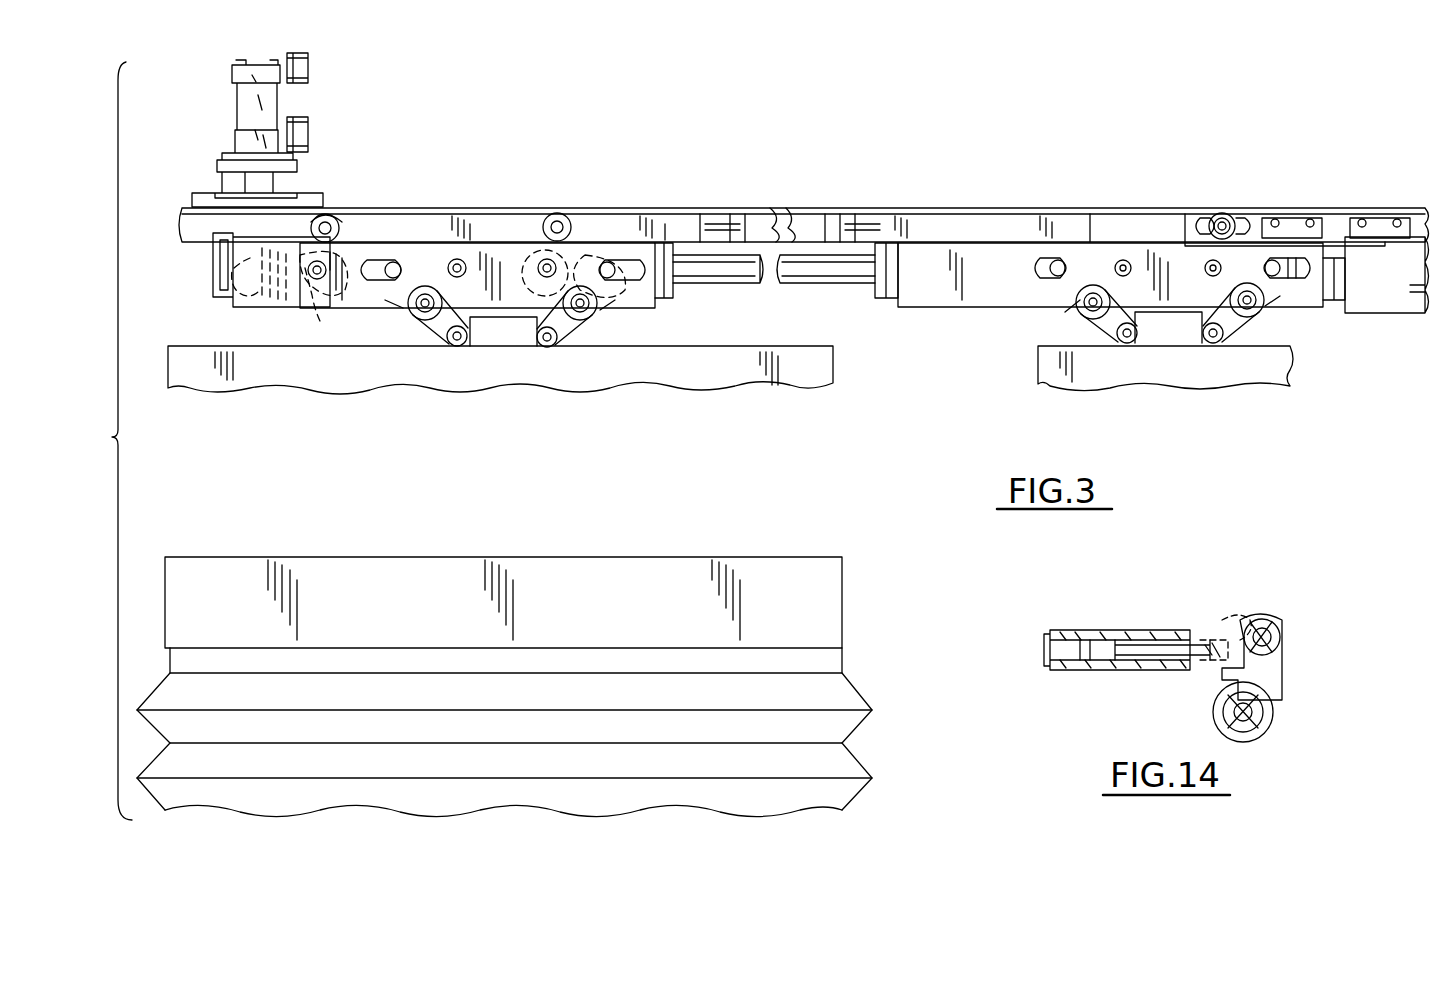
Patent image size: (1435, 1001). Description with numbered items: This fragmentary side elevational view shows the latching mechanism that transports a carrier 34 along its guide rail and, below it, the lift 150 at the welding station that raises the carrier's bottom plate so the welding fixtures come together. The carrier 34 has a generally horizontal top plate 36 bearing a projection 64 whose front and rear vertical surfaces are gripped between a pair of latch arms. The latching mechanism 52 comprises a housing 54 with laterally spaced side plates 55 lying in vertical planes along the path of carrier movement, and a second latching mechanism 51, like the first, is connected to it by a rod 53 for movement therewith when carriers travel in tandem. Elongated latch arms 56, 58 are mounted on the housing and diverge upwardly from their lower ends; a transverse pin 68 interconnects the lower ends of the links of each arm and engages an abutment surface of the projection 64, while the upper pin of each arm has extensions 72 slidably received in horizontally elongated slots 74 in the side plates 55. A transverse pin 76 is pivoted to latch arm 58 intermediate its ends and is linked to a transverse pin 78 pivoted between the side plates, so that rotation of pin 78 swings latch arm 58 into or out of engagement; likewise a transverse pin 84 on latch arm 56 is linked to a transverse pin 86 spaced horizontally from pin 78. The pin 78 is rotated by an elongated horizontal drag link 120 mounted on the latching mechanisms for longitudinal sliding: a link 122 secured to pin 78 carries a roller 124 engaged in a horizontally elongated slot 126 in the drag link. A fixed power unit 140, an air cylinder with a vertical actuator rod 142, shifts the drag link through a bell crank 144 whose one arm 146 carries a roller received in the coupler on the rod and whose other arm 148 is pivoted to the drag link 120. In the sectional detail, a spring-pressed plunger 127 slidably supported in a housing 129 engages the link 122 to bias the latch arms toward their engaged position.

In FIG. 3, the carrier 34 is at (842, 360).
In FIG. 3, the top plate 36 is at (718, 368).
In FIG. 3, the second latching mechanism 51 is at (487, 240).
In FIG. 3, the latching mechanism 52 is at (1144, 232).
In FIG. 3, the rod 53 is at (846, 284).
In FIG. 3, the housing 54 is at (970, 310).
In FIG. 3, the side plates 55 is at (928, 292).
In FIG. 3, the latch arm 56 is at (437, 343).
In FIG. 3, the latch arm 58 is at (595, 325).
In FIG. 3, the projection 64 is at (518, 350).
In FIG. 3, the transverse pin 68 is at (1122, 346).
In FIG. 3, the extensions 72 is at (1052, 262).
In FIG. 3, the slots 74 is at (1035, 270).
In FIG. 3, the transverse pin 76 is at (1255, 306).
In FIG. 3, the transverse pin 78 is at (1221, 266).
In FIG. 3, the transverse pin 84 is at (1085, 310).
In FIG. 3, the transverse pin 86 is at (1122, 260).
In FIG. 3, the drag link 120 is at (960, 216).
In FIG. 14, the link 122 is at (1290, 652).
In FIG. 3, the roller 124 is at (1226, 218).
In FIG. 3, the slot 126 is at (1208, 220).
In FIG. 14, the spring-pressed plunger 127 is at (1222, 628).
In FIG. 14, the housing 129 is at (1085, 630).
In FIG. 3, the power unit 140 is at (313, 130).
In FIG. 3, the actuator rod 142 is at (232, 264).
In FIG. 3, the bell crank 144 is at (328, 310).
In FIG. 3, the arm 146 is at (262, 318).
In FIG. 3, the arm 148 is at (346, 238).
In FIG. 3, the lift 150 is at (872, 708).